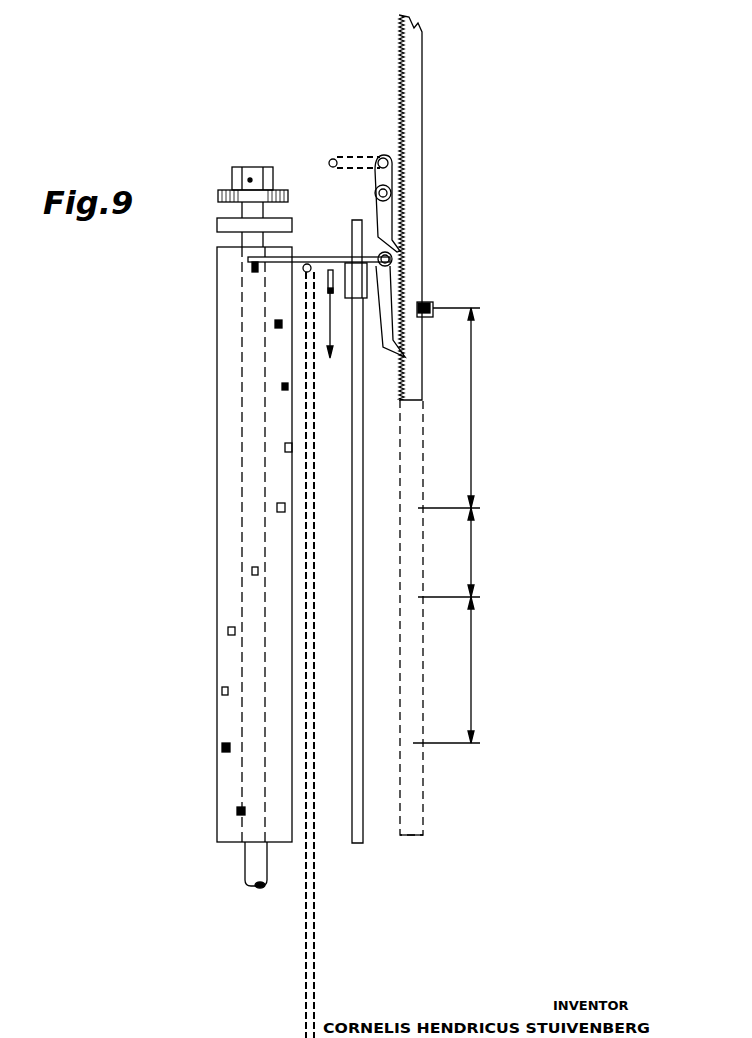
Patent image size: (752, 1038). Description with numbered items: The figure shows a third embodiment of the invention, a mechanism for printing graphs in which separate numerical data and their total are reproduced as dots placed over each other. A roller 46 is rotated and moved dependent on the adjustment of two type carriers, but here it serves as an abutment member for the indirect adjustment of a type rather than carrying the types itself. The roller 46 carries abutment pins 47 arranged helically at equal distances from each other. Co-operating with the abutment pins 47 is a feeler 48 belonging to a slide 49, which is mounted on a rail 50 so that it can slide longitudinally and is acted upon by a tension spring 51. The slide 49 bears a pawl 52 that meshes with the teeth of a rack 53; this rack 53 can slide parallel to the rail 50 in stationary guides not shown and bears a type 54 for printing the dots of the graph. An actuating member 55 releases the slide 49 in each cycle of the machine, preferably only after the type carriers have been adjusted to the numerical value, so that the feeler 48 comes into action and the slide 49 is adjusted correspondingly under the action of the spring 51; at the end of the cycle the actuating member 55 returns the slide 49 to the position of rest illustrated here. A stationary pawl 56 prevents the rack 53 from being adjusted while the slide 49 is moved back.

The roller 46 is at (233, 424).
The abutment pins 47 is at (239, 809).
The feeler 48 is at (338, 258).
The slide 49 is at (355, 285).
The rail 50 is at (360, 830).
The tension spring 51 is at (307, 930).
The pawl 52 is at (390, 343).
The rack 53 is at (420, 83).
The type 54 is at (430, 304).
The actuating member 55 is at (328, 290).
The stationary pawl 56 is at (382, 180).